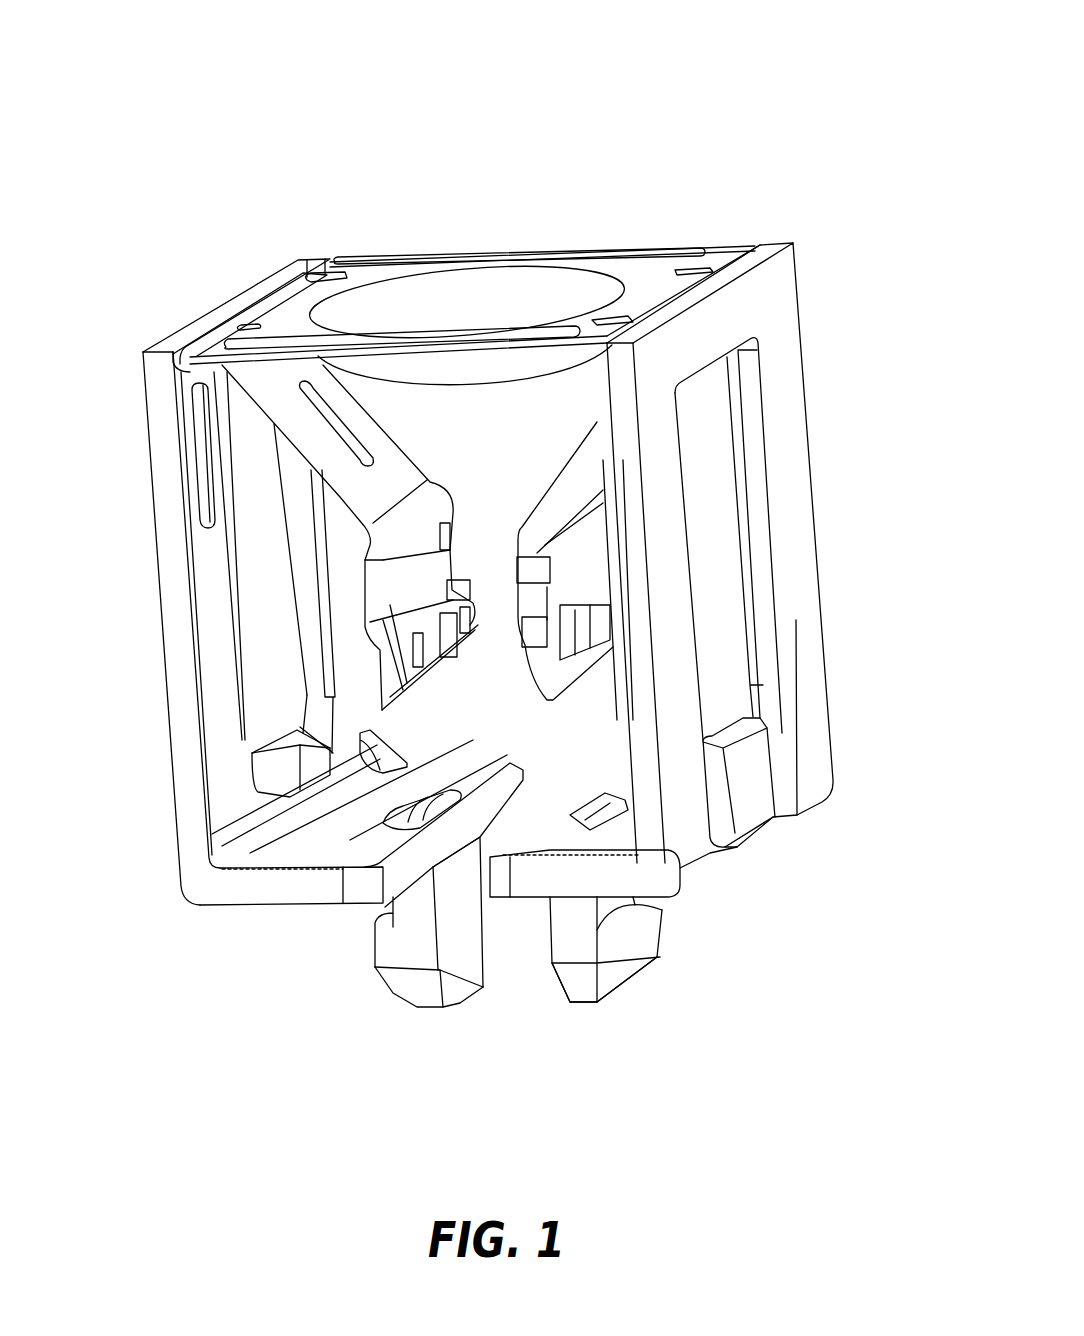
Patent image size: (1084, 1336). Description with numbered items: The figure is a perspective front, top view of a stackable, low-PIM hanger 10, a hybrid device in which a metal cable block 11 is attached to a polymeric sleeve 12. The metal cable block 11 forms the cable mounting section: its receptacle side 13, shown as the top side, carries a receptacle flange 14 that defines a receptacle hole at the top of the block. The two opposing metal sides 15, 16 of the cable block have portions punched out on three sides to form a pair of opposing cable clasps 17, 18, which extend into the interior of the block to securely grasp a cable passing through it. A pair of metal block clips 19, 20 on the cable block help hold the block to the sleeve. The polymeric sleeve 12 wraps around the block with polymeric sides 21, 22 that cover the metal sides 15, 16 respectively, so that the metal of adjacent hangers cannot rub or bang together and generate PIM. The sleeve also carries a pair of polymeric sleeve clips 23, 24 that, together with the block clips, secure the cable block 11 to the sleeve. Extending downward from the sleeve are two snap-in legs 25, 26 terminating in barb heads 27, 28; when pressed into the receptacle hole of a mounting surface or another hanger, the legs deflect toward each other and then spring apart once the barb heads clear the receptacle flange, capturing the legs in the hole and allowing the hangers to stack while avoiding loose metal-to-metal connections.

The stackable, low-PIM hanger 10 is at (848, 131).
The metal cable block 11 is at (399, 212).
The polymeric sleeve 12 is at (858, 331).
The receptacle side 13 is at (650, 285).
The receptacle flange 14 is at (483, 288).
The opposing side of the cable block 15 is at (208, 584).
The opposing side of the cable block 16 is at (740, 467).
The cable clasp 17 is at (417, 477).
The cable clasp 18 is at (577, 493).
The metal block clip 19 is at (430, 797).
The metal block clip 20 is at (593, 800).
The polymeric side 21 is at (180, 748).
The polymeric side 22 is at (790, 540).
The polymeric sleeve clip 23 is at (292, 765).
The polymeric sleeve clip 24 is at (752, 800).
The snap-in leg 25 is at (351, 983).
The snap-in leg 26 is at (680, 975).
The barb head 27 is at (432, 992).
The barb head 28 is at (620, 978).